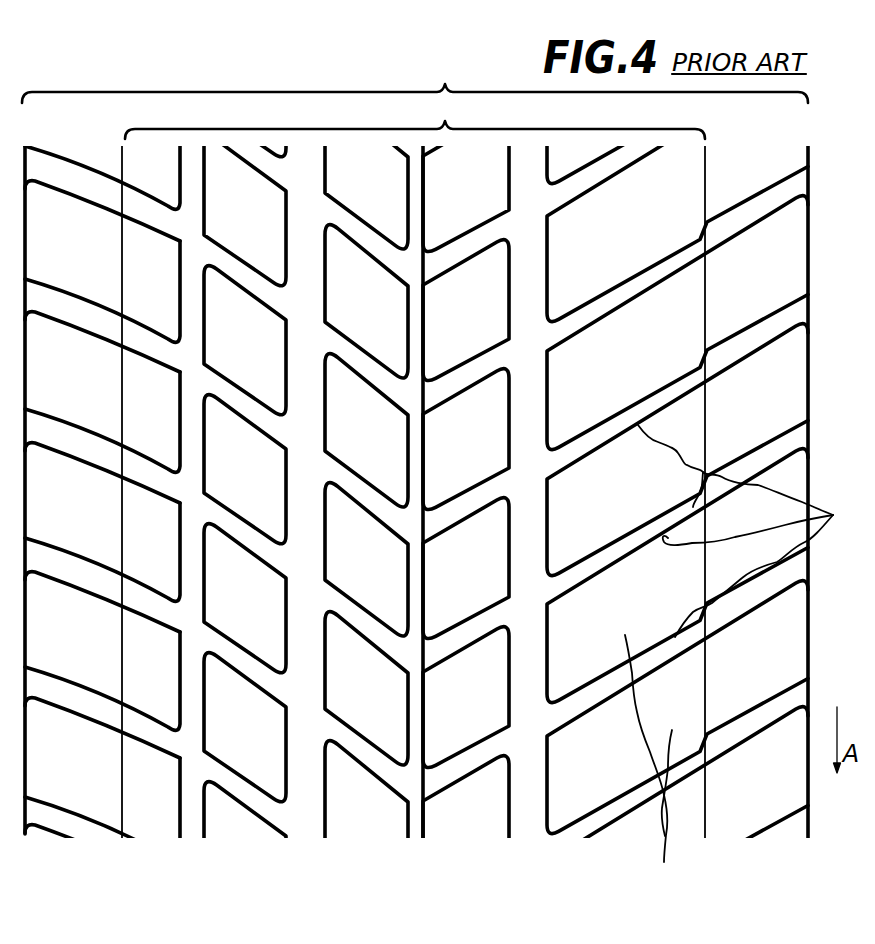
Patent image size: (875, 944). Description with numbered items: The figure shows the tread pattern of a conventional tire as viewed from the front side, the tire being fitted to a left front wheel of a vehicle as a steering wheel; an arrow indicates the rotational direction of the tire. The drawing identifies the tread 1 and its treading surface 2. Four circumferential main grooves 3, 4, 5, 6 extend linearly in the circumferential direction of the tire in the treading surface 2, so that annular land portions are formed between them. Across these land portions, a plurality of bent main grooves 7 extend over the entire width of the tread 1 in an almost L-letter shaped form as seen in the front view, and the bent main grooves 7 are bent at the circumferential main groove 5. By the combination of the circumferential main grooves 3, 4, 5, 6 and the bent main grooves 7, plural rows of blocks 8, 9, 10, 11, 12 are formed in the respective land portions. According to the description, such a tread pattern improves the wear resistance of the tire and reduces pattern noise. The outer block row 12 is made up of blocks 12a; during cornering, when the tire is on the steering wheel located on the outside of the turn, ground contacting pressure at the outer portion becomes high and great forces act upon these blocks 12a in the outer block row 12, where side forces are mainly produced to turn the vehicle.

The tread 1 is at (415, 80).
The treading surface 2 is at (415, 117).
The circumferential main groove 3 is at (204, 815).
The circumferential main groove 4 is at (325, 803).
The circumferential main groove 5 is at (423, 823).
The circumferential main groove 6 is at (547, 820).
The bent main grooves 7 is at (826, 508).
The block row 8 is at (145, 825).
The block row 9 is at (244, 825).
The block row 10 is at (373, 825).
The block row 11 is at (475, 825).
The outer block row 12 is at (607, 825).
The blocks 12a is at (659, 759).